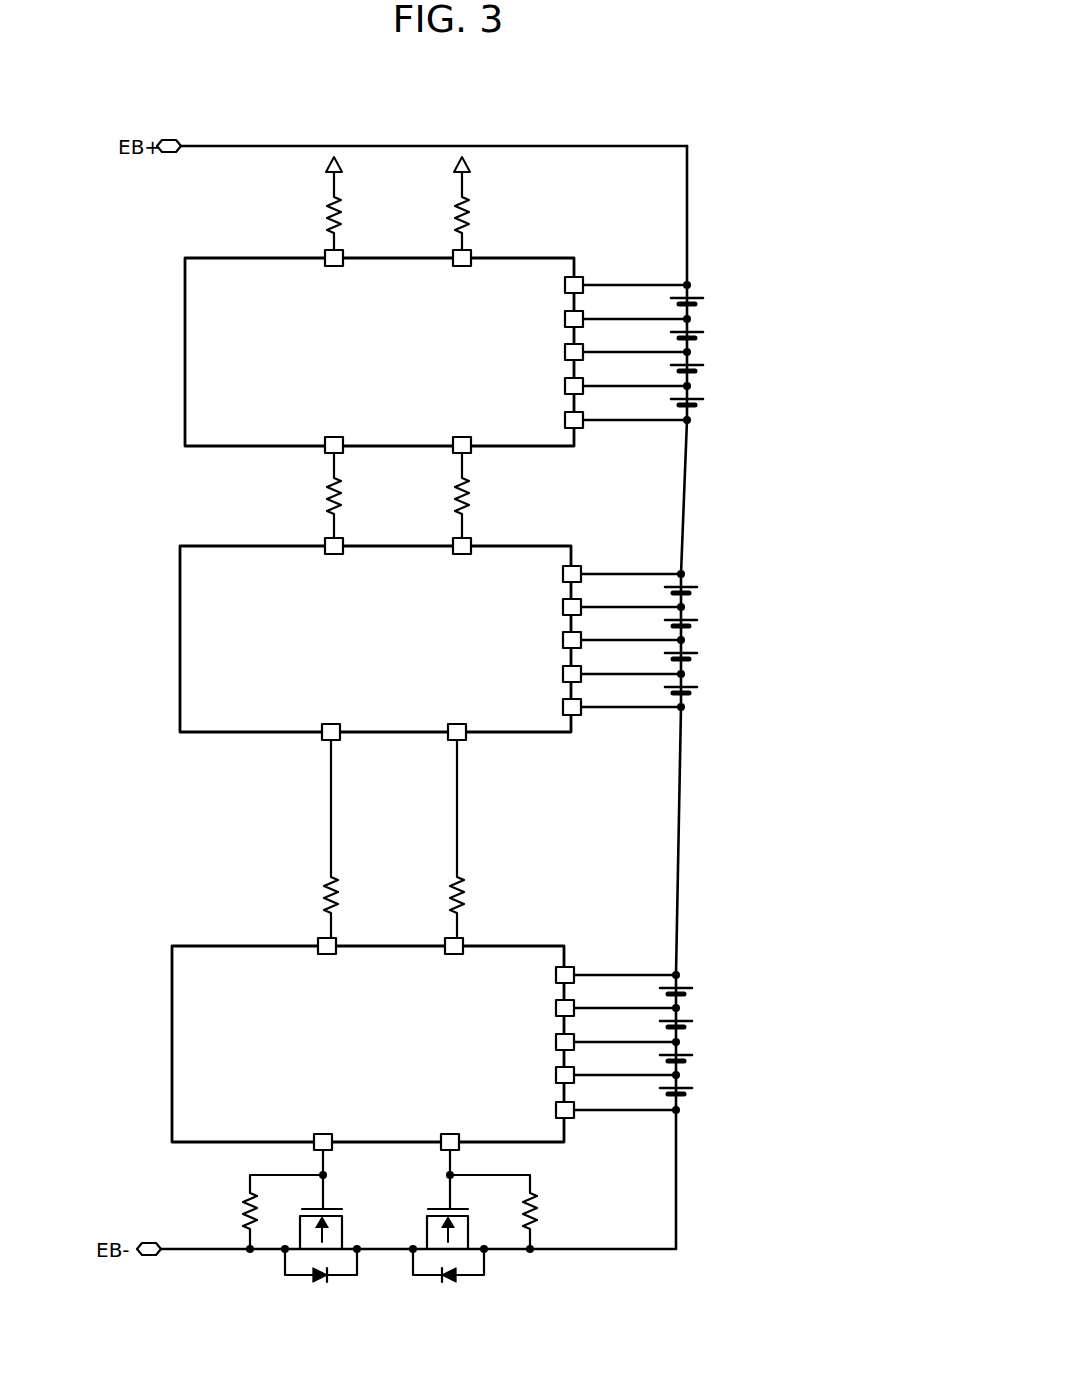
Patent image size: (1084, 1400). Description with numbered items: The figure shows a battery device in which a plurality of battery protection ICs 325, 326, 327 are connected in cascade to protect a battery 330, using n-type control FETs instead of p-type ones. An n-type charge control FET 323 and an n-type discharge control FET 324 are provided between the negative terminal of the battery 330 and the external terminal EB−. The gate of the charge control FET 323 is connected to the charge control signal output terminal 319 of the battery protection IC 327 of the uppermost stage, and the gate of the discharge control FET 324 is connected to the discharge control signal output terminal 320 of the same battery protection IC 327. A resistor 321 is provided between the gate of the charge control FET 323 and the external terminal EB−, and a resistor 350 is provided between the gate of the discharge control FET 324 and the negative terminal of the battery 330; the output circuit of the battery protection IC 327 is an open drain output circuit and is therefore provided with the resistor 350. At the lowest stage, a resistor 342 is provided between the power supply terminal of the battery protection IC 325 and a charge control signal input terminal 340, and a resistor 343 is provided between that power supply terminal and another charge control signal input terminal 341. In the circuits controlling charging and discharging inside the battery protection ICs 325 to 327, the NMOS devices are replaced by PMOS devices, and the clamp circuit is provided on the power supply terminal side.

The charge control signal output terminal 319 is at (314, 1146).
The discharge control signal output terminal 320 is at (465, 1148).
The resistor 321 is at (237, 1203).
The charge control FET 323 is at (307, 1283).
The discharge control FET 324 is at (475, 1285).
The battery protection IC 325 is at (195, 333).
The battery protection IC 326 is at (190, 640).
The battery protection IC 327 is at (183, 1022).
The battery 330 is at (690, 1098).
The charge control signal input terminal 340 is at (325, 256).
The charge control signal input terminal 341 is at (475, 251).
The resistor 342 is at (318, 192).
The resistor 343 is at (478, 192).
The resistor 350 is at (545, 1210).